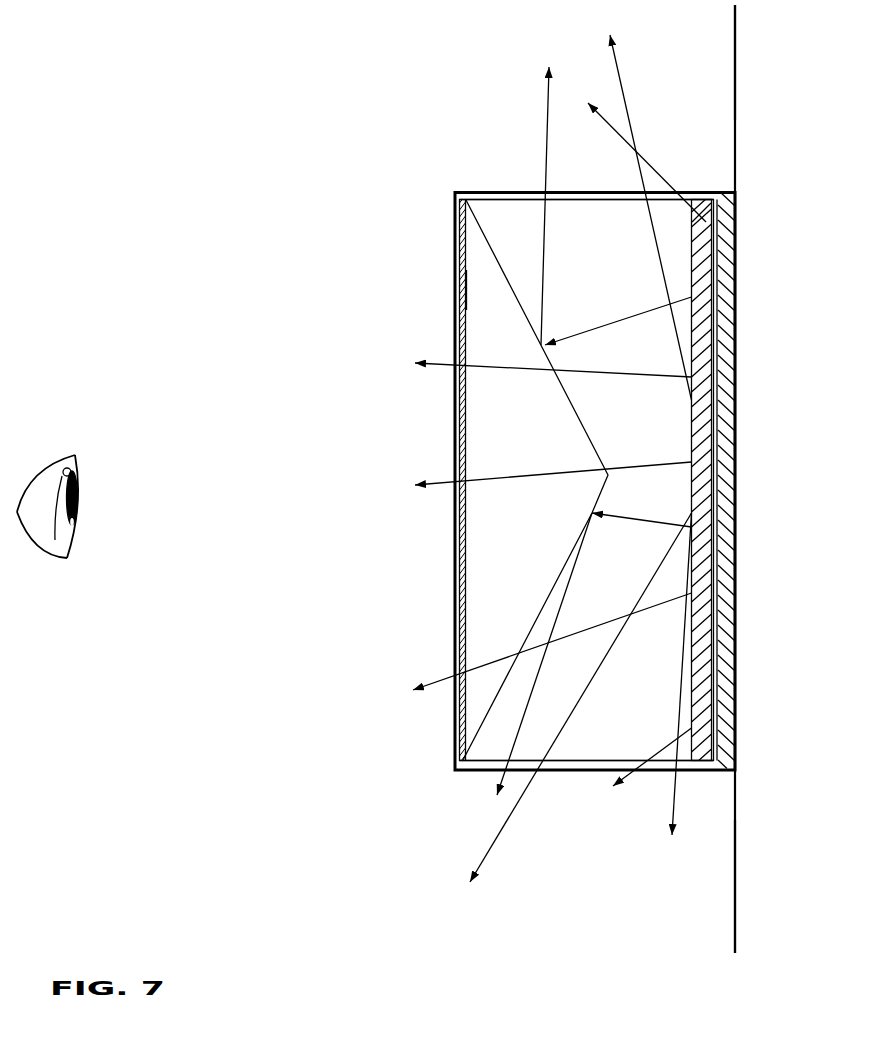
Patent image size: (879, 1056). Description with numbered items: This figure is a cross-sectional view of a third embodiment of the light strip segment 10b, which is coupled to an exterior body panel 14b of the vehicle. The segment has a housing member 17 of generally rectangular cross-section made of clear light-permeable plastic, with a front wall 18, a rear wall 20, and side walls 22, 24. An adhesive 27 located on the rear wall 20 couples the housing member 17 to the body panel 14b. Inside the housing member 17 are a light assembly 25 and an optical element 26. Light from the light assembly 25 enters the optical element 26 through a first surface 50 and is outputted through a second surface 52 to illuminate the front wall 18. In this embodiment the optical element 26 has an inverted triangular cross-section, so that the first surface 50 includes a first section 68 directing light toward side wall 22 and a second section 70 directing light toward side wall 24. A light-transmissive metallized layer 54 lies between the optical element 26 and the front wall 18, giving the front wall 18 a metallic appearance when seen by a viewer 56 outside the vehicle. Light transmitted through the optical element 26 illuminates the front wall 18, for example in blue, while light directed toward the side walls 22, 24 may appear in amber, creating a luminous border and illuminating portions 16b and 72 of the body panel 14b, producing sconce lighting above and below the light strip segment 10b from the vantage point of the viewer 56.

The light strip segment 10b is at (433, 195).
The exterior body panel 14b is at (737, 158).
The portion of the body panel 16b is at (733, 910).
The housing member 17 is at (495, 197).
The front wall 18 is at (459, 537).
The rear wall 20 is at (716, 248).
The side wall 22 is at (583, 770).
The side wall 24 is at (585, 193).
The light assembly 25 is at (682, 197).
The optical element 26 is at (512, 585).
The adhesive 27 is at (713, 298).
The first surface 50 is at (592, 428).
The second surface 52 is at (466, 288).
The metallized layer 54 is at (458, 312).
The viewer 56 is at (42, 488).
The first section 68 is at (527, 626).
The second section 70 is at (568, 407).
The portion of the body panel 72 is at (733, 60).